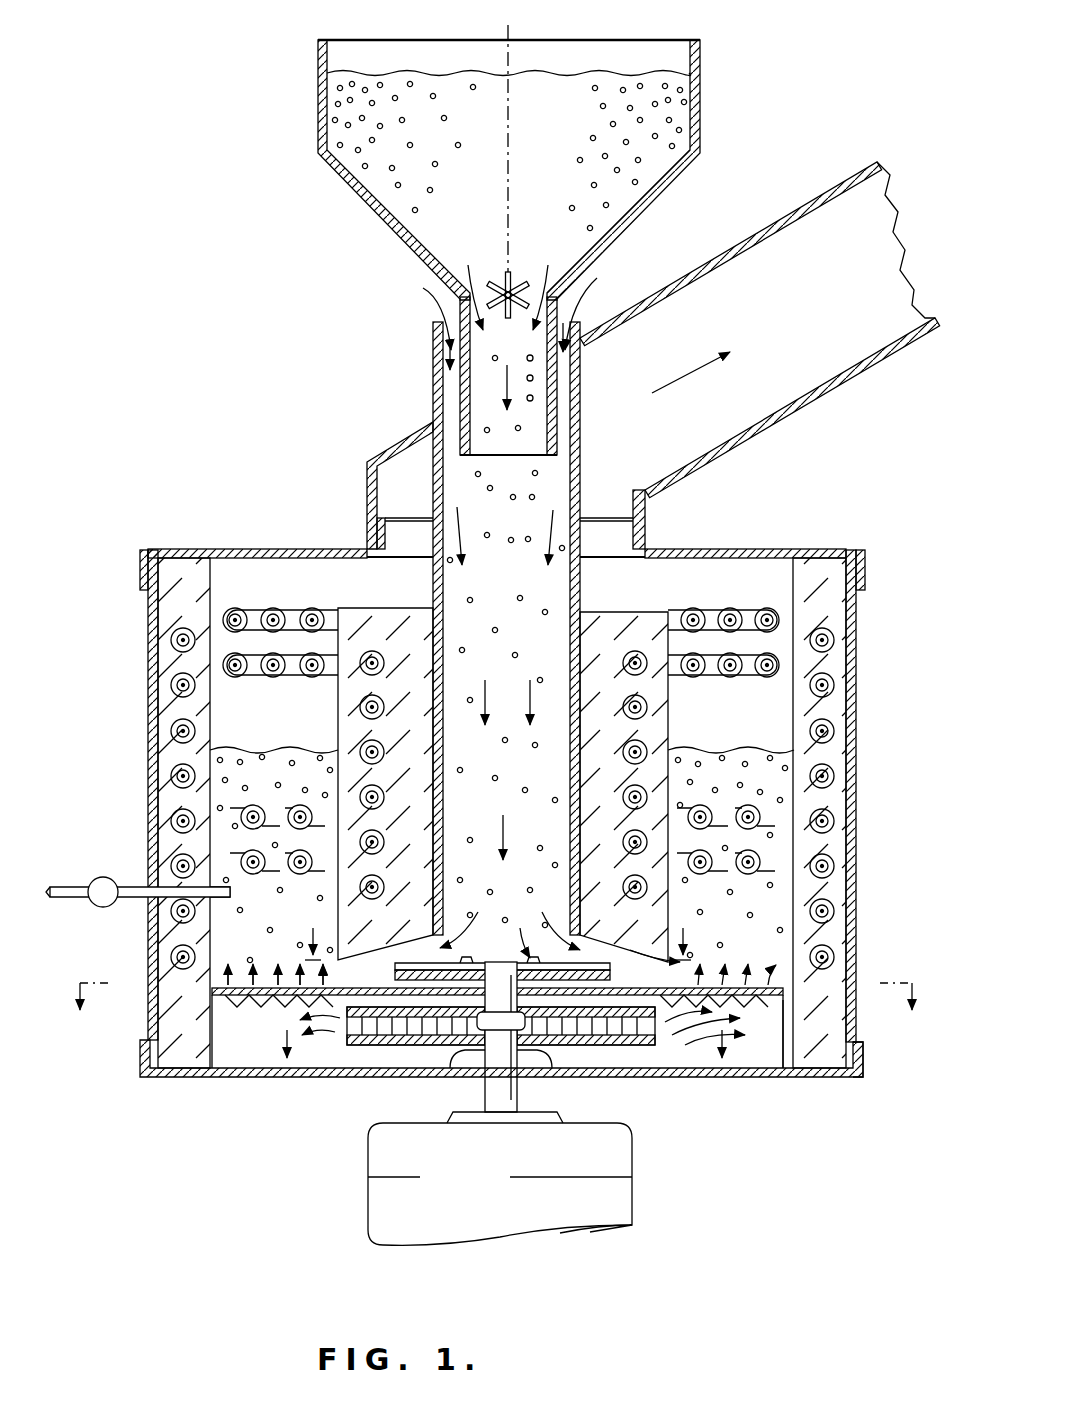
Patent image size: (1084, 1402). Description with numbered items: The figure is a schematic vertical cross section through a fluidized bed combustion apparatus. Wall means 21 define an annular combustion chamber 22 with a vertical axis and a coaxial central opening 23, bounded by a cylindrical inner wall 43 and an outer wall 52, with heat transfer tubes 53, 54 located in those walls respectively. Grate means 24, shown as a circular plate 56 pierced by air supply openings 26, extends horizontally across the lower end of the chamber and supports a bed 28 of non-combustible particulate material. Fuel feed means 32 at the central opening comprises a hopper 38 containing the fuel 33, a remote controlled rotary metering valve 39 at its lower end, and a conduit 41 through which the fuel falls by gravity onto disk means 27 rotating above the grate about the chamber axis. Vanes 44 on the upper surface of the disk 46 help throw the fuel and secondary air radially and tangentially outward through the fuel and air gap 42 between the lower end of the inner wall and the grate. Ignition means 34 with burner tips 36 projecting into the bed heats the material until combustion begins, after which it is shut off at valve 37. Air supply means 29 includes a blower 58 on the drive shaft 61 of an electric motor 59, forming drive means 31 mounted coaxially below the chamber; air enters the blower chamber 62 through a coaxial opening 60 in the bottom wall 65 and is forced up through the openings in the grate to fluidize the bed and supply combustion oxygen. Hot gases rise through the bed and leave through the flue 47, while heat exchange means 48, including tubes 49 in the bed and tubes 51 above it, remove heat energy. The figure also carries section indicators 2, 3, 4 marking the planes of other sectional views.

The section line 2- 2 is at (500, 942).
The section line 3- 3 is at (495, 1021).
The section line 4- 4 is at (505, 1049).
The wall means 21 is at (146, 652).
The annular combustion chamber 22 is at (262, 585).
The central opening 23 is at (572, 617).
The grate means 24 is at (218, 1000).
The air supply openings 26 is at (755, 1003).
The disk means 27 is at (510, 929).
The bed 28 is at (766, 798).
The air supply means 29 is at (352, 1047).
The drive means 31 is at (362, 1215).
The fuel feed means 32 is at (708, 123).
The fuel 33 is at (533, 358).
The ignition means 34 is at (130, 882).
The burner tips 36 is at (225, 887).
The valve 37 is at (108, 907).
The hopper 38 is at (637, 215).
The rotary metering valve 39 is at (523, 282).
The conduit 41 is at (556, 420).
The fuel and air gap 42 is at (340, 970).
The cylindrical inner wall 43 is at (405, 620).
The vanes 44 is at (422, 962).
The disk 46 is at (407, 970).
The flue 47 is at (800, 405).
The heat exchange means 48 is at (318, 608).
The tubes 49 is at (302, 814).
The tubes 51 is at (297, 612).
The outer wall 52 is at (150, 603).
The heat transfer tubes 53 is at (384, 705).
The heat transfer tubes 54 is at (170, 748).
The circular plate 56 is at (777, 970).
The blower 58 is at (625, 1048).
The electric motor 59 is at (510, 122).
The coaxial opening 60 is at (470, 1068).
The drive shaft 61 is at (517, 1097).
The blower chamber 62 is at (228, 1078).
The bottom wall 65 is at (708, 1080).